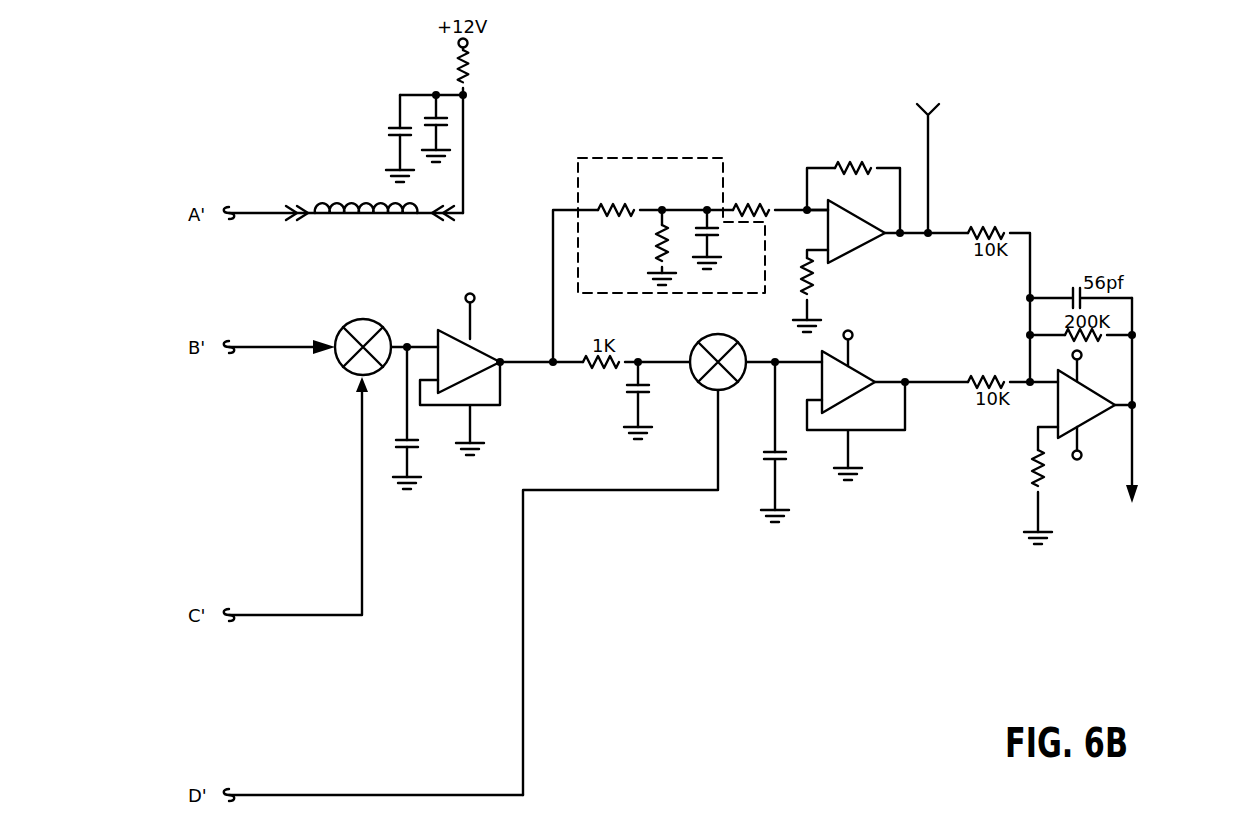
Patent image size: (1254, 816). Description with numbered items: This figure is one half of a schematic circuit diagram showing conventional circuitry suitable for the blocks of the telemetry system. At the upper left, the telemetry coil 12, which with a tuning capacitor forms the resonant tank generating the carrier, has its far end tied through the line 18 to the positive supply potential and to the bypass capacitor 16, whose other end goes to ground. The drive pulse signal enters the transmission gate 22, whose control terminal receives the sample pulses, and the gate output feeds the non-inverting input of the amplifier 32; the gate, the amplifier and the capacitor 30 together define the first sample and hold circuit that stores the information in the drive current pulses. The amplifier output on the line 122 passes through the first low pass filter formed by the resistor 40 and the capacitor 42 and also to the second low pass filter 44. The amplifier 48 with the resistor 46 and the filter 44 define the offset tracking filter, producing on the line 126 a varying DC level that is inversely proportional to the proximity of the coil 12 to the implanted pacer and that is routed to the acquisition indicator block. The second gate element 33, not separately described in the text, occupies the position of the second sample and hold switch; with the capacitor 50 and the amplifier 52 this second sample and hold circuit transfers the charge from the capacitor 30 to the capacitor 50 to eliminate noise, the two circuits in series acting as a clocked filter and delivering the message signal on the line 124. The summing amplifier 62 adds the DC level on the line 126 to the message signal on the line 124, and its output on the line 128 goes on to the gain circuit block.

The telemetry coil 12 is at (356, 215).
The bypass capacitor 16 is at (362, 100).
The line 18 is at (465, 175).
The transmission gate 22 is at (384, 324).
The capacitor 30 is at (397, 438).
The amplifier 32 is at (456, 330).
The analog switch (4016) 33 is at (712, 392).
The resistor 40 is at (582, 366).
The capacitor 42 is at (631, 402).
The second low pass filter 44 is at (689, 156).
The resistor 46 is at (733, 210).
The amplifier 48 is at (863, 246).
The capacitor 50 is at (768, 462).
The amplifier 52 is at (864, 356).
The summing amplifier 62 is at (1095, 420).
The line 122 is at (523, 365).
The line 124 is at (942, 381).
The line 126 is at (930, 165).
The line 128 is at (1134, 437).